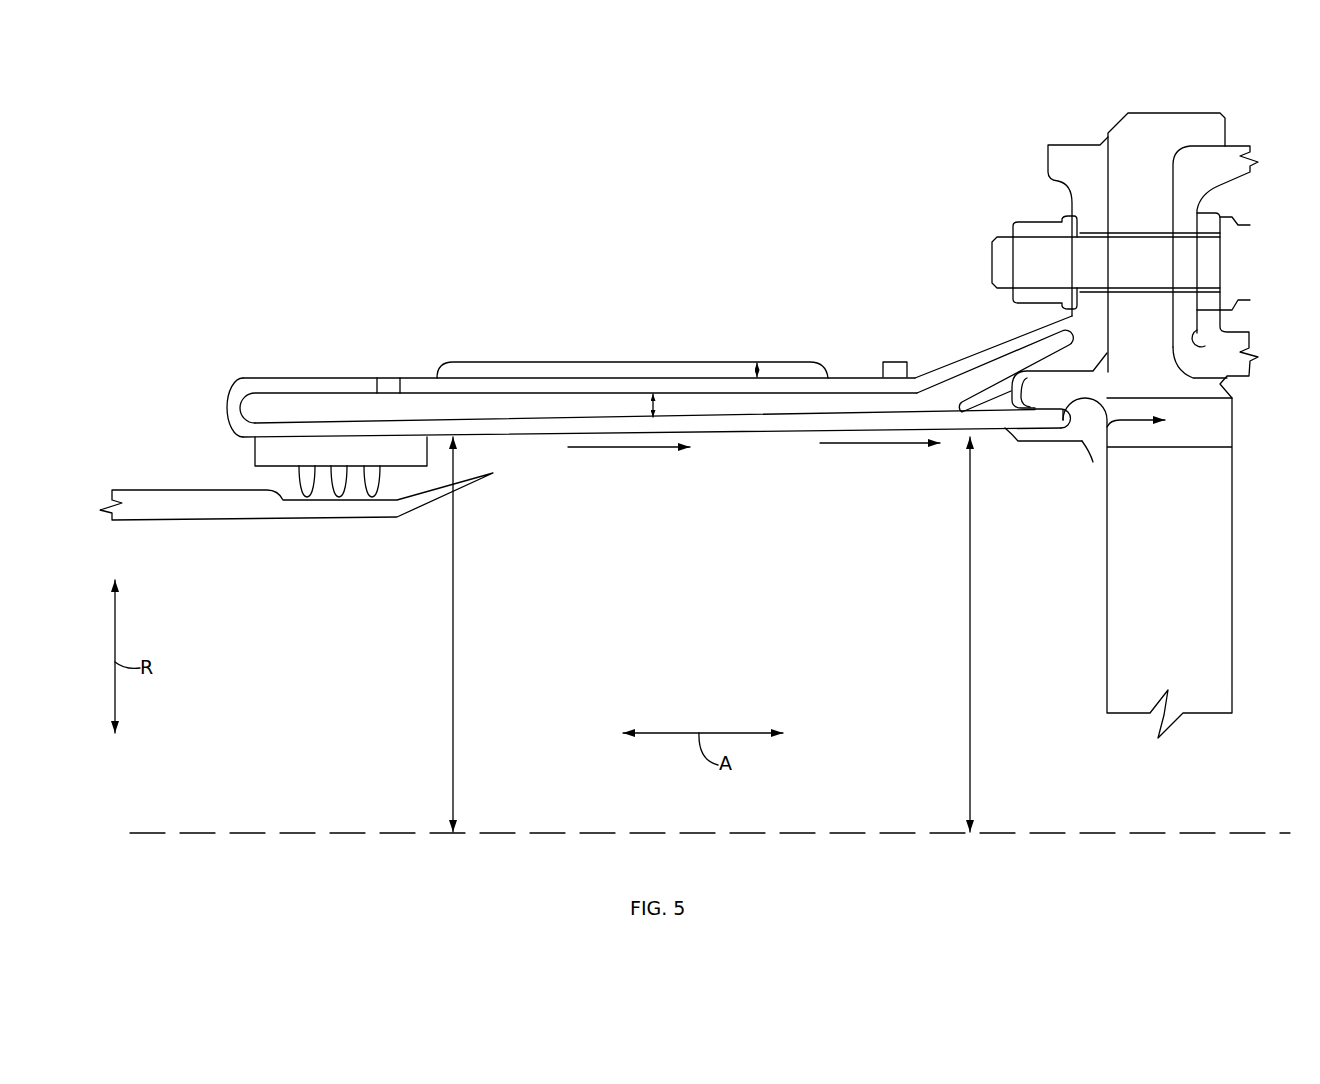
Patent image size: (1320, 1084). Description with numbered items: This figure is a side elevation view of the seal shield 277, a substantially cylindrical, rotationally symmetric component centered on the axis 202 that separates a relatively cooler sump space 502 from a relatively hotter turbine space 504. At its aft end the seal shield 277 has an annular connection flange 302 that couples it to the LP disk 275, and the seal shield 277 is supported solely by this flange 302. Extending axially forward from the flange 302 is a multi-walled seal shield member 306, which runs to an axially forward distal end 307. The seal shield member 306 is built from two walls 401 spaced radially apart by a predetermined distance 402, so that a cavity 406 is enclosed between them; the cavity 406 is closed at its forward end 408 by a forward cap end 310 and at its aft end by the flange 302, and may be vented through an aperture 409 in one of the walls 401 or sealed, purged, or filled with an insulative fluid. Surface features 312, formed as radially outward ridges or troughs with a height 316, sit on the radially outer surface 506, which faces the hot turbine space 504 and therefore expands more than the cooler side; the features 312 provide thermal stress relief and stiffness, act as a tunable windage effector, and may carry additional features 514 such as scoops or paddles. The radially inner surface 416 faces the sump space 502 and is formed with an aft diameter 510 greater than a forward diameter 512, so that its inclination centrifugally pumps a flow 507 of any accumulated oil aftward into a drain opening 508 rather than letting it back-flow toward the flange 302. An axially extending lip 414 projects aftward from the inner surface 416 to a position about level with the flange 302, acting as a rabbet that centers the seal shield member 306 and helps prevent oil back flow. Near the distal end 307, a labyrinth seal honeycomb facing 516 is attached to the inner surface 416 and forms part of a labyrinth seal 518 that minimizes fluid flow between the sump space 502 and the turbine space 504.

The axis 202 is at (1161, 836).
The LP disk 275 is at (1125, 150).
The seal shield 277 is at (830, 335).
The aft annular connection flange 302 is at (1048, 162).
The multi-walled seal shield member 306 is at (556, 377).
The axially forward distal end 307 is at (296, 368).
The forward cap end 310 is at (228, 408).
The surface features 312 is at (650, 362).
The height of surface features 316 is at (755, 364).
The walls 401 is at (333, 383).
The predetermined distance 402 is at (656, 407).
The cavity 406 is at (645, 408).
The forward end 408 is at (231, 373).
The aperture 409 is at (389, 378).
The axially extending lip 414 is at (1003, 437).
The radially inner surface 416 is at (762, 438).
The sump space 502 is at (585, 505).
The turbine space 504 is at (538, 285).
The radially outer surface 506 is at (856, 377).
The flow 507 is at (617, 448).
The drain opening 508 is at (1235, 414).
The aft diameter 510 is at (970, 637).
The forward diameter 512 is at (453, 632).
The additional features 514 is at (905, 362).
The labyrinth seal honeycomb facing 516 is at (341, 467).
The labyrinth seal 518 is at (233, 473).